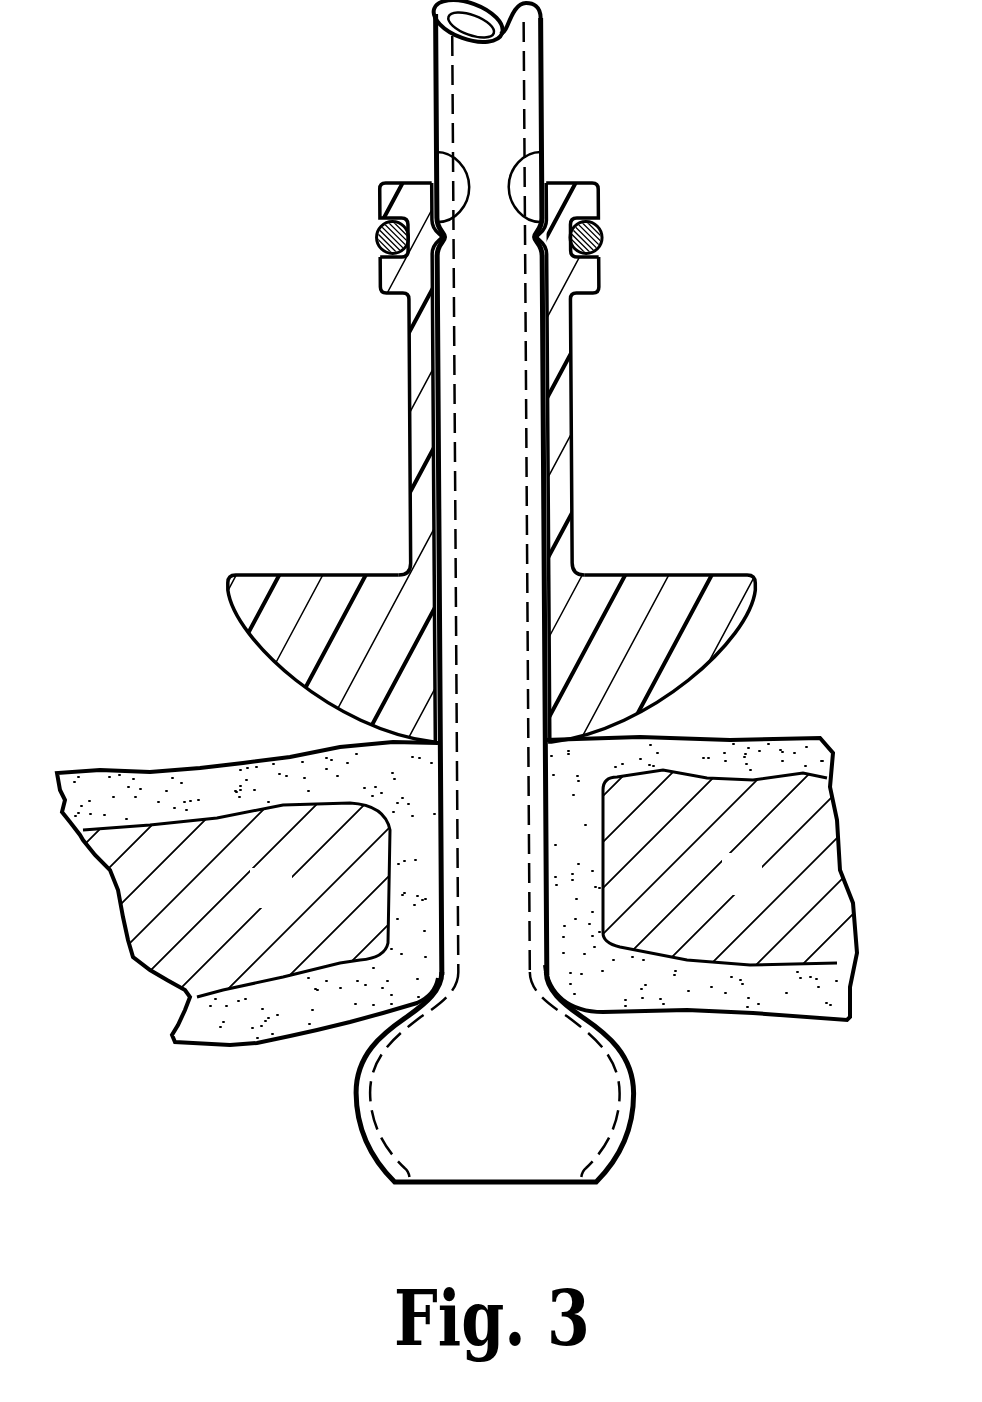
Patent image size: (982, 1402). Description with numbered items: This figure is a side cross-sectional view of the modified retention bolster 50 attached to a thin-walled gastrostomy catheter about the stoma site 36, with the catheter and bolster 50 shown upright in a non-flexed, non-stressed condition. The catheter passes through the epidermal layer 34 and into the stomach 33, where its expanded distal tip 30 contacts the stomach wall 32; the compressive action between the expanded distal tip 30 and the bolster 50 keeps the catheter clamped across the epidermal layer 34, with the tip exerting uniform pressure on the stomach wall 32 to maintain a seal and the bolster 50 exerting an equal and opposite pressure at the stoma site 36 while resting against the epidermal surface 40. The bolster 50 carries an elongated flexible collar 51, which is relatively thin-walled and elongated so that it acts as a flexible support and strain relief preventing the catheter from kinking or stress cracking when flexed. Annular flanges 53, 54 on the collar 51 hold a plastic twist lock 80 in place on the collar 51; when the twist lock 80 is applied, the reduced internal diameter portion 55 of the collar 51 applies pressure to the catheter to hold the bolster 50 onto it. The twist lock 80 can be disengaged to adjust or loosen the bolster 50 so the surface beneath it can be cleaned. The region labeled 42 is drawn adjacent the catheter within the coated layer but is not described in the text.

The expanded distal tip 30 is at (623, 1133).
The stomach wall 32 is at (740, 993).
The stomach 33 is at (278, 1115).
The epidermal layer 34 is at (290, 905).
The stoma site 36 is at (425, 740).
The epidermal surface 40 is at (232, 756).
The coating adjacent tube 42 is at (547, 872).
The modified retention bolster 50 is at (746, 626).
The elongated flexible collar 51 is at (405, 442).
The annular flange 53 is at (376, 295).
The annular flange 54 is at (377, 190).
The reduced internal diameter portion 55 is at (453, 153).
The twist lock 80 is at (375, 231).